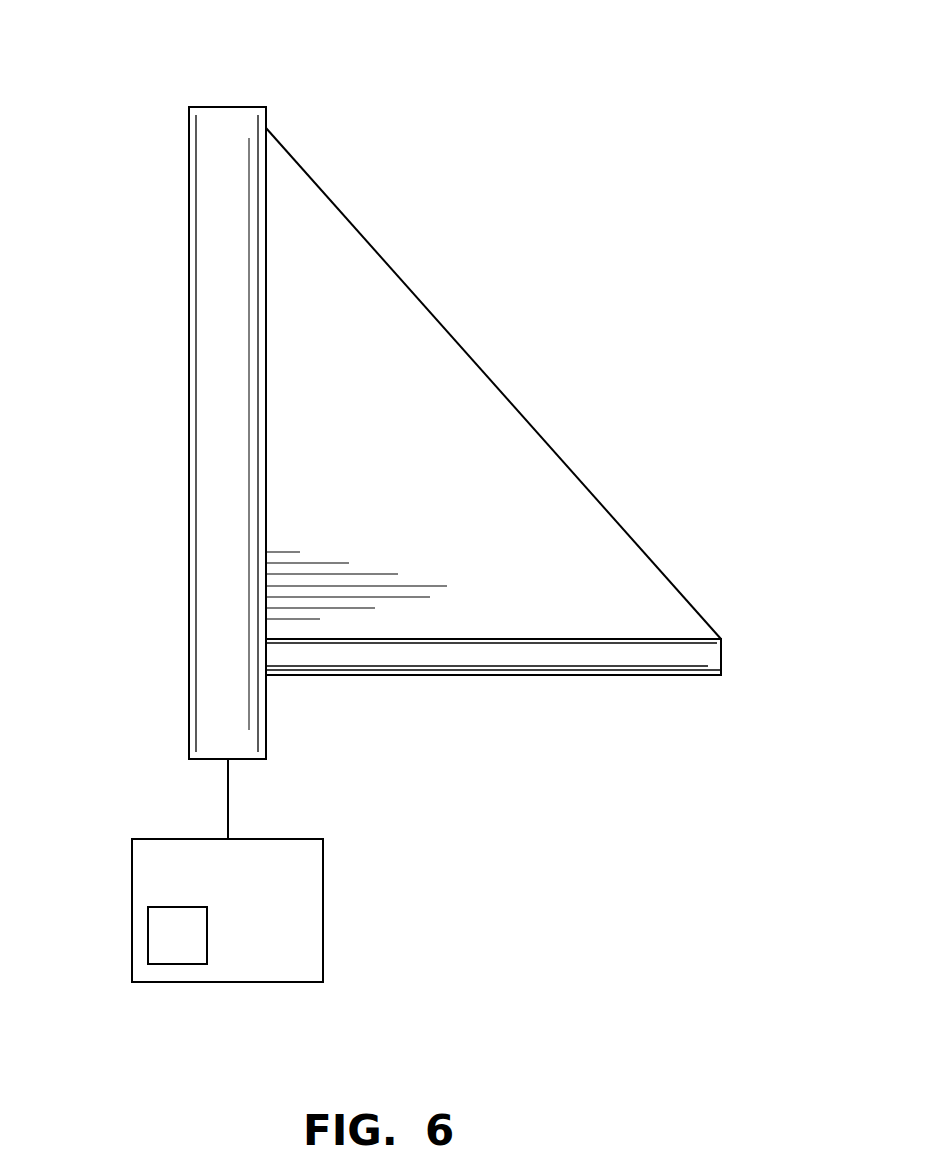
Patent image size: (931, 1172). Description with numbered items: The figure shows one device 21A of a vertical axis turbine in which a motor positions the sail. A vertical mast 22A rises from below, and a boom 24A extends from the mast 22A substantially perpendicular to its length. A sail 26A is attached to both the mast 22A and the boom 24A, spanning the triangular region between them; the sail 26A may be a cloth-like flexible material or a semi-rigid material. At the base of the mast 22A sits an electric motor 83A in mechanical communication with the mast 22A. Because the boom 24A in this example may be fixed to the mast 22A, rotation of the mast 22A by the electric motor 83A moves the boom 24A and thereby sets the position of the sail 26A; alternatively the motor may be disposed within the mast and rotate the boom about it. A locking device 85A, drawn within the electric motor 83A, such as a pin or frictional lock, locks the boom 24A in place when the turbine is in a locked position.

The device 21A is at (224, 88).
The mast 22A is at (210, 360).
The boom 24A is at (722, 657).
The sail 26A is at (432, 352).
The electric motor 83A is at (323, 873).
The locking device 85A is at (162, 943).